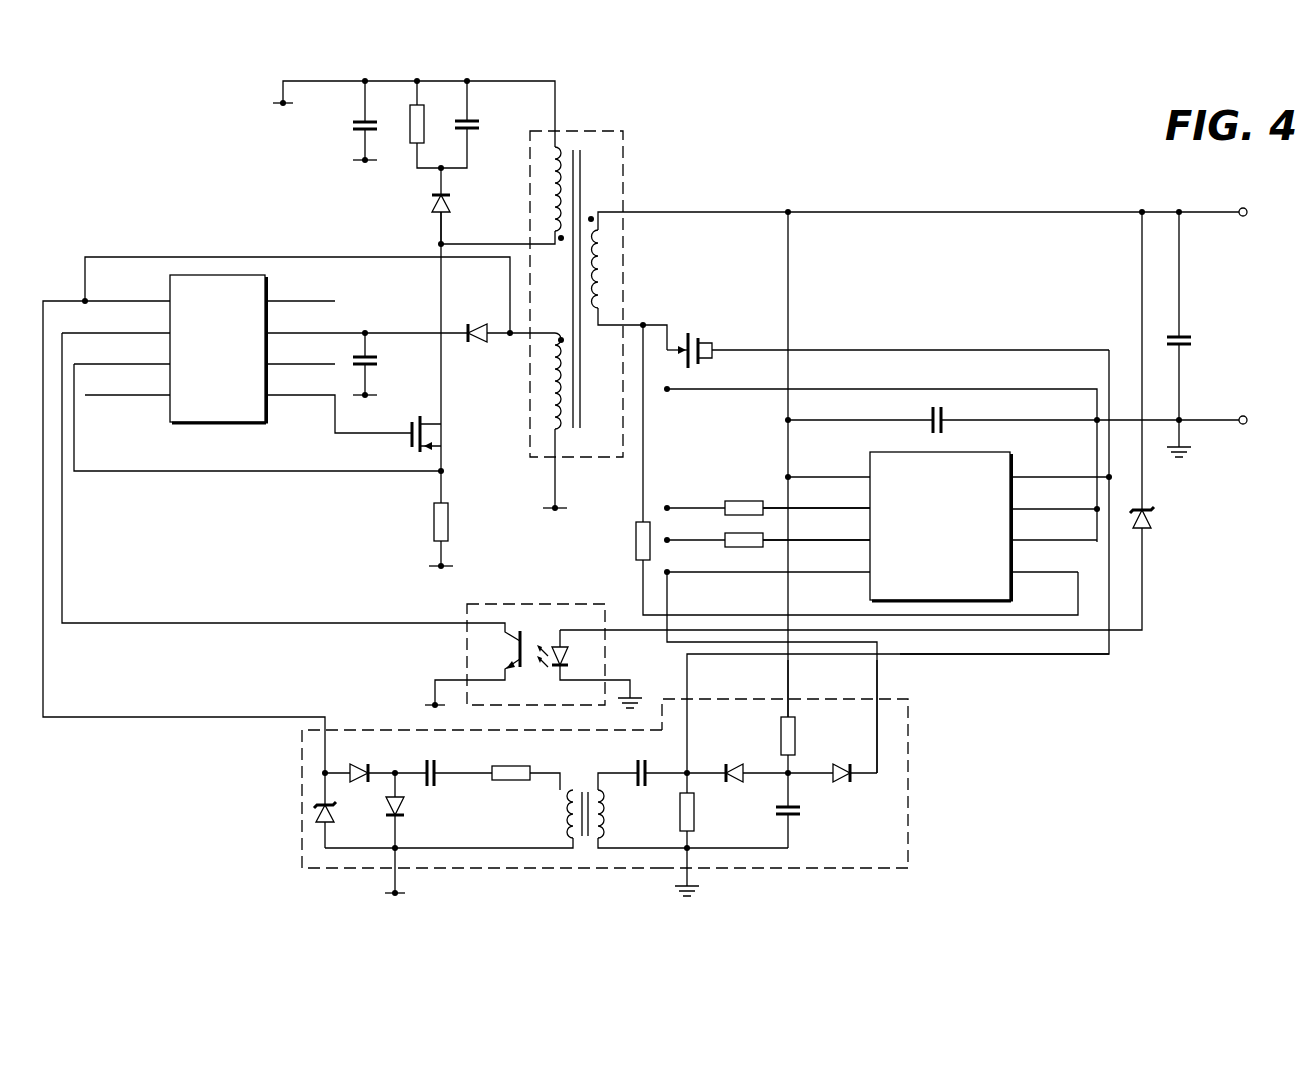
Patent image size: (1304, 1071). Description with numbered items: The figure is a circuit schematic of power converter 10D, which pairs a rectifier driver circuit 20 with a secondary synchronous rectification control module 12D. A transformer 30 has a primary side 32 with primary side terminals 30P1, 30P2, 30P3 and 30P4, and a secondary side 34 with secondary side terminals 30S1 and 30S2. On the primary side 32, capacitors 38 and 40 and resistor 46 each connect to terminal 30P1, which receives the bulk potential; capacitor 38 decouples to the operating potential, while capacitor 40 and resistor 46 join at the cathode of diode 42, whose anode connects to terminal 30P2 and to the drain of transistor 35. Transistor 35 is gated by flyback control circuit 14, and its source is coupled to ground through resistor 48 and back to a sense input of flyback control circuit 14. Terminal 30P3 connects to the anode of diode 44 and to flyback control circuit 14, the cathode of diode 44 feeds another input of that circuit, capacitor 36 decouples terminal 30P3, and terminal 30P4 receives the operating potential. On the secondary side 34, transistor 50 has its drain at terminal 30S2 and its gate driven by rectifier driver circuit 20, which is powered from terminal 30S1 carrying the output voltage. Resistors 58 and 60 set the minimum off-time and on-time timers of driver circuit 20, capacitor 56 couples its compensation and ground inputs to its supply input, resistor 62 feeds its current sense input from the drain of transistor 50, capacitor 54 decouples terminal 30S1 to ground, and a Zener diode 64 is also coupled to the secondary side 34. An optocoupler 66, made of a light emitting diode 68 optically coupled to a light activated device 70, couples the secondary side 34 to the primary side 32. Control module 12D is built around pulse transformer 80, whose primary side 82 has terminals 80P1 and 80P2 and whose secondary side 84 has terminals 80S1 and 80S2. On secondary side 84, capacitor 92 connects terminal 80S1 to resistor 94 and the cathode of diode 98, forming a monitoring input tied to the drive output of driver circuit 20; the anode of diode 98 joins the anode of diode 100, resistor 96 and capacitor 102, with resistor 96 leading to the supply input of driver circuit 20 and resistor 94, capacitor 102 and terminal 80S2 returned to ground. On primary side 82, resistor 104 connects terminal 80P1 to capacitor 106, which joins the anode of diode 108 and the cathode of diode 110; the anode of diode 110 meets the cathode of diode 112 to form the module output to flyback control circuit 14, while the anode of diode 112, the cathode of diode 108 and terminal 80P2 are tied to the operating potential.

The power converter 10D is at (1128, 163).
The secondary synchronous rectification control module 12D is at (300, 800).
The flyback control circuit 14 is at (197, 423).
The rectifier driver circuit 20 is at (986, 452).
The transformer 30 is at (588, 131).
The primary side terminal 30P1 is at (548, 85).
The primary side terminal 30P2 is at (540, 244).
The primary side terminal 30P3 is at (528, 335).
The primary side terminal 30P4 is at (552, 481).
The secondary side terminal 30S1 is at (630, 212).
The secondary side terminal 30S2 is at (632, 325).
The primary side 32 is at (283, 201).
The secondary side 34 is at (672, 140).
The field effect transistor 35 is at (442, 428).
The energy storage element 36 is at (378, 360).
The energy storage element 38 is at (355, 118).
The energy storage element 40 is at (480, 128).
The diode 42 is at (430, 200).
The diode 44 is at (466, 325).
The impedance element 46 is at (424, 125).
The impedance element 48 is at (433, 522).
The field effect transistor 50 is at (702, 340).
The energy storage element 54 is at (1190, 334).
The energy storage element 56 is at (930, 418).
The impedance element 58 is at (725, 501).
The impedance element 60 is at (725, 547).
The impedance element 62 is at (638, 558).
The Zener diode 64 is at (1148, 505).
The optocoupler 66 is at (572, 604).
The light emitting diode 68 is at (555, 672).
The light activated device 70 is at (524, 632).
The pulse transformer 80 is at (590, 840).
The primary side terminal 80P1 is at (554, 788).
The primary side terminal 80P2 is at (556, 848).
The secondary side terminal 80S1 is at (618, 786).
The secondary side terminal 80S2 is at (615, 848).
The primary side 82 is at (448, 862).
The secondary side 84 is at (643, 866).
The energy storage element 92 is at (640, 758).
The impedance element 94 is at (696, 804).
The impedance element 96 is at (795, 736).
The diode 98 is at (728, 762).
The diode 100 is at (850, 778).
The energy storage element 102 is at (802, 812).
The impedance element 104 is at (496, 766).
The energy storage element 106 is at (434, 788).
The diode 108 is at (404, 815).
The diode 110 is at (368, 762).
The diode 112 is at (334, 806).